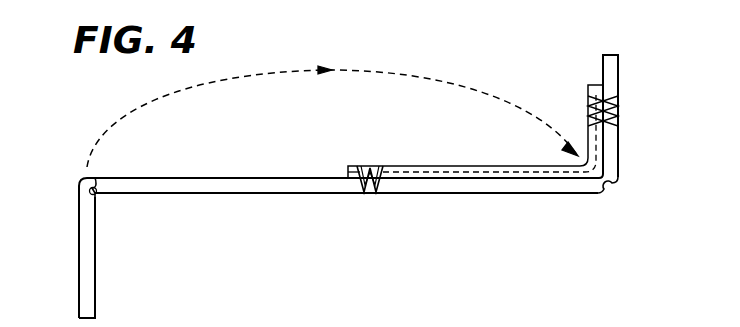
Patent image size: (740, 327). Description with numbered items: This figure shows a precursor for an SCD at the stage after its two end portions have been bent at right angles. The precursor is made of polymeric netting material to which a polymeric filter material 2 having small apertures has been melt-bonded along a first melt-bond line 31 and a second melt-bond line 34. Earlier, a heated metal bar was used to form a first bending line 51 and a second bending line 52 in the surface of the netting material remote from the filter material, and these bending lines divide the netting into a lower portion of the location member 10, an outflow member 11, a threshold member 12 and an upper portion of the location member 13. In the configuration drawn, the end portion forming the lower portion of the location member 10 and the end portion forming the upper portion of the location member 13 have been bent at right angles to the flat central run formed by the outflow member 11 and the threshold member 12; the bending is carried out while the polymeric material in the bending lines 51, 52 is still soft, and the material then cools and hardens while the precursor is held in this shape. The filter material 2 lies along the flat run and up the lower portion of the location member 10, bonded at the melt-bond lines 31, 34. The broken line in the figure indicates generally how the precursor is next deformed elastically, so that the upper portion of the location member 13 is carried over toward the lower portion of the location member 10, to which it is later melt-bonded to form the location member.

The polymeric filter material 2 is at (440, 166).
The lower portion of the location member 10 is at (619, 124).
The outflow member 11 is at (483, 194).
The threshold member 12 is at (205, 178).
The upper portion of the location member 13 is at (77, 262).
The melt-bond line 31 is at (365, 165).
The melt-bond line 34 is at (619, 97).
The bending line 51 is at (615, 185).
The bending line 52 is at (98, 197).